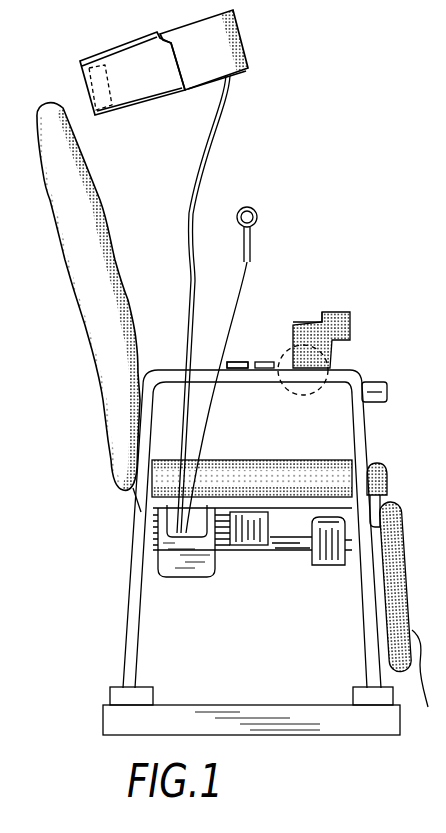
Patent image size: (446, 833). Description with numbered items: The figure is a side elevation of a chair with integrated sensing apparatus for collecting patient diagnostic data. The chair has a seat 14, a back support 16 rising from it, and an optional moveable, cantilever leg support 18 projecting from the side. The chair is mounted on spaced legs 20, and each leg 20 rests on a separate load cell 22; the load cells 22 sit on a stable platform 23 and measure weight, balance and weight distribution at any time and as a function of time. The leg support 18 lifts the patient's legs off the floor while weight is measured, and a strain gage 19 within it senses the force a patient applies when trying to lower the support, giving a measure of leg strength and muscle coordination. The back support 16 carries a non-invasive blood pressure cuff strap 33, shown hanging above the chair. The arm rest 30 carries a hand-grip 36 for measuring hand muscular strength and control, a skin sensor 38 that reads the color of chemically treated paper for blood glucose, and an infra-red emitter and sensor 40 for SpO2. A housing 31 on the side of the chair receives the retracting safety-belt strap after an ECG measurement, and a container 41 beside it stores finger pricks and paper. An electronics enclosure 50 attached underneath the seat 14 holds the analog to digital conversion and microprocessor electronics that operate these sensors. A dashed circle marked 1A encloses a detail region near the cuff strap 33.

The back support 16 is at (104, 237).
The non-invasive blood pressure cuff strap 33 is at (249, 43).
The infra-red emitter and sensor 40 is at (275, 362).
The skin sensor 38 is at (242, 362).
The arm rest 30 is at (247, 370).
The detail area 1A is at (289, 387).
The hand-grip 36 is at (376, 382).
The seat 14 is at (285, 462).
The strain gage 19 is at (378, 463).
The housing 31 is at (193, 560).
The electronics enclosure 50 is at (252, 530).
The container 41 is at (335, 553).
The leg 20 is at (132, 628).
The load cell 22 is at (142, 698).
The platform 23 is at (385, 720).
The cantilever leg support 18 is at (428, 707).